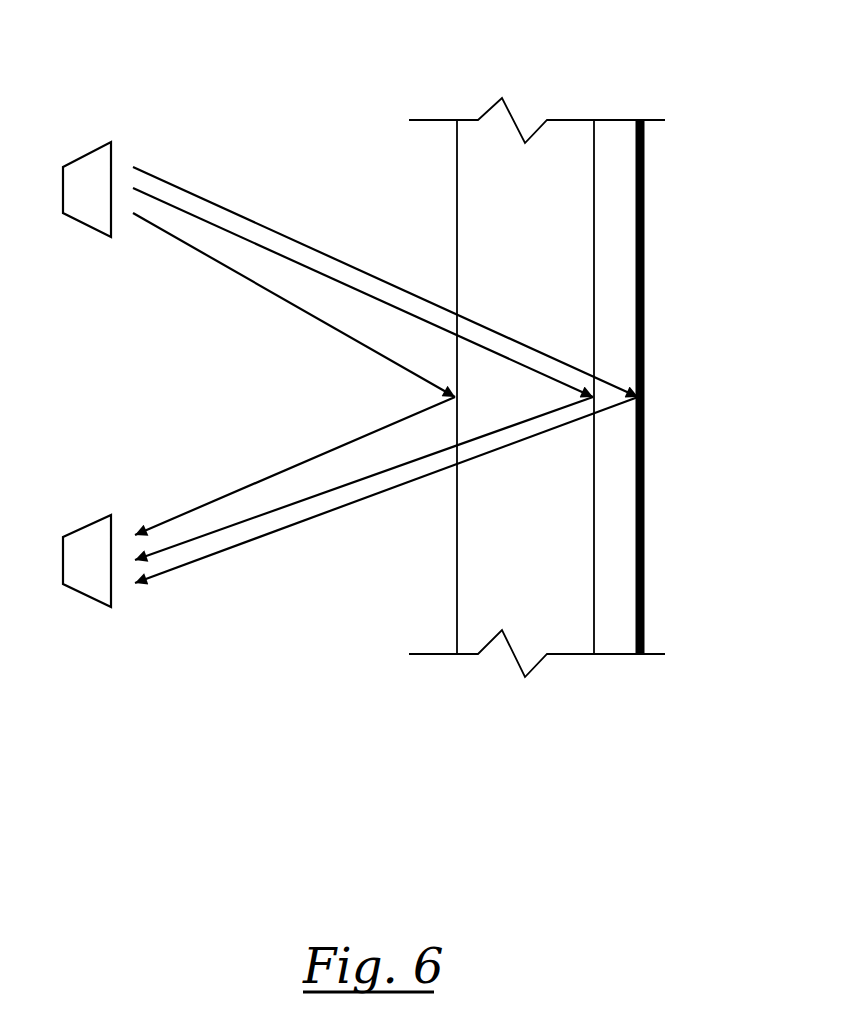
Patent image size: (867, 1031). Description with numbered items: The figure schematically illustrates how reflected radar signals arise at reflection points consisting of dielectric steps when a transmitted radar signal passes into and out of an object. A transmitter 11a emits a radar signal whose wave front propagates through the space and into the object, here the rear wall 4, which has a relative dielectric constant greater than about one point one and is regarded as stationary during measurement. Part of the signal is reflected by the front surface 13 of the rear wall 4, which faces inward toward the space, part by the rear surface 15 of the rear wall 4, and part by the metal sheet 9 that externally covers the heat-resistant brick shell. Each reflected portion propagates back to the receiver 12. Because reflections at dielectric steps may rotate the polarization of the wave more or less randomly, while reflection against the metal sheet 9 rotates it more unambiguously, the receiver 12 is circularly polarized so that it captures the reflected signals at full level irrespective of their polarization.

The rear wall 4 is at (502, 143).
The metal sheet 9 is at (645, 490).
The transmitter 11a is at (88, 168).
The receiver 12 is at (91, 560).
The front surface 13 is at (448, 515).
The rear surface 15 is at (594, 167).